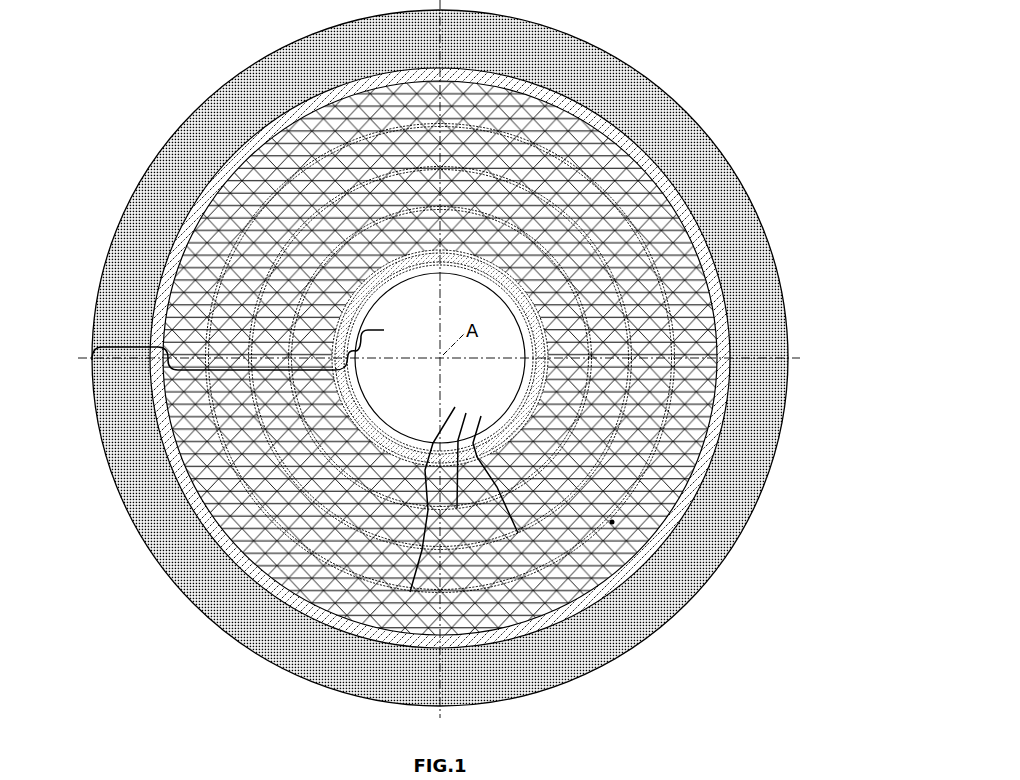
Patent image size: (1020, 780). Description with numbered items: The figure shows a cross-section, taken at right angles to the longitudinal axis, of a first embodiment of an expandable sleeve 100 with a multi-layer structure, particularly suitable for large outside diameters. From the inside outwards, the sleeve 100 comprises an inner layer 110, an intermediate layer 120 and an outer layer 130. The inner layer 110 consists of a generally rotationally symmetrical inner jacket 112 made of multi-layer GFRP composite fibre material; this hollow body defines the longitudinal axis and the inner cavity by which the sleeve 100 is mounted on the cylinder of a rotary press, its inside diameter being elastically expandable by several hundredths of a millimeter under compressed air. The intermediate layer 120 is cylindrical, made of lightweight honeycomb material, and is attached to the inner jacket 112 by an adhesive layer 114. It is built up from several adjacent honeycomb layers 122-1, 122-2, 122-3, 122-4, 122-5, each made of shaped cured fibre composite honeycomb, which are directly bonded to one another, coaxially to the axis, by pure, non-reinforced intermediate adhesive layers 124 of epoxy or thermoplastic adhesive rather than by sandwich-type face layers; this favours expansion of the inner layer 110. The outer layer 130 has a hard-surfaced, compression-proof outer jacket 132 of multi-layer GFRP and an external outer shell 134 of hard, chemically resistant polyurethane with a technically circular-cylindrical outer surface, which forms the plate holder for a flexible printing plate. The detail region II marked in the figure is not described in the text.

The expandable sleeve 100 is at (675, 69).
The inner layer 110 is at (440, 358).
The inner jacket 112 is at (365, 403).
The adhesive layer 114 is at (533, 348).
The intermediate layer 120 is at (278, 370).
The honeycomb layer 122-1 is at (537, 315).
The honeycomb layer 122-2 is at (567, 367).
The honeycomb layer 122-3 is at (600, 422).
The honeycomb layer 122-4 is at (630, 465).
The honeycomb layer 122-5 is at (650, 505).
The intermediate adhesive layers 124 is at (530, 425).
The outer layer 130 is at (127, 347).
The outer jacket 132 is at (699, 245).
The outer shell 134 is at (761, 274).
The detail region II is at (612, 522).